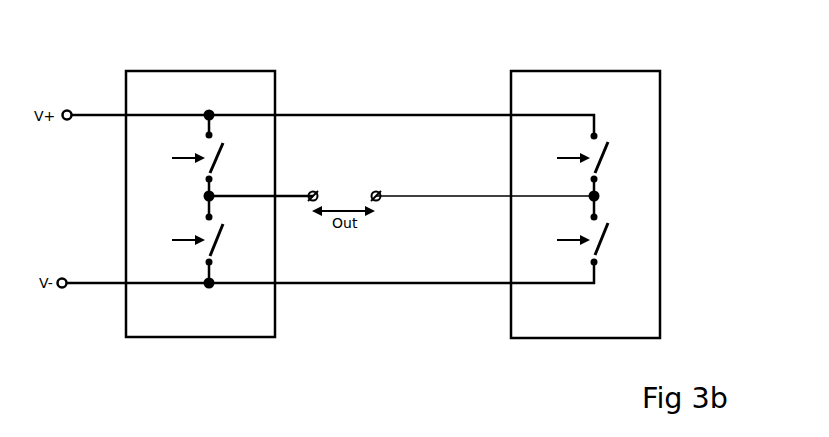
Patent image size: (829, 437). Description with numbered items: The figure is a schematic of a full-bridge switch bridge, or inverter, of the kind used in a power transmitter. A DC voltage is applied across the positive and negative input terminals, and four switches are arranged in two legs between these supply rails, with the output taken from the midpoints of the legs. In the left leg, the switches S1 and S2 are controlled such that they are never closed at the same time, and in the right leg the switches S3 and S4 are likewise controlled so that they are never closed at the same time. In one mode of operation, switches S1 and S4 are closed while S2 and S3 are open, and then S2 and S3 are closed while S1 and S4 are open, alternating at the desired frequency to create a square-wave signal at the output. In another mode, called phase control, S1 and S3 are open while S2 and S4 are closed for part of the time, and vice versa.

The switch S1 is at (223, 169).
The switch S2 is at (215, 242).
The switch S3 is at (612, 170).
The switch S4 is at (603, 242).